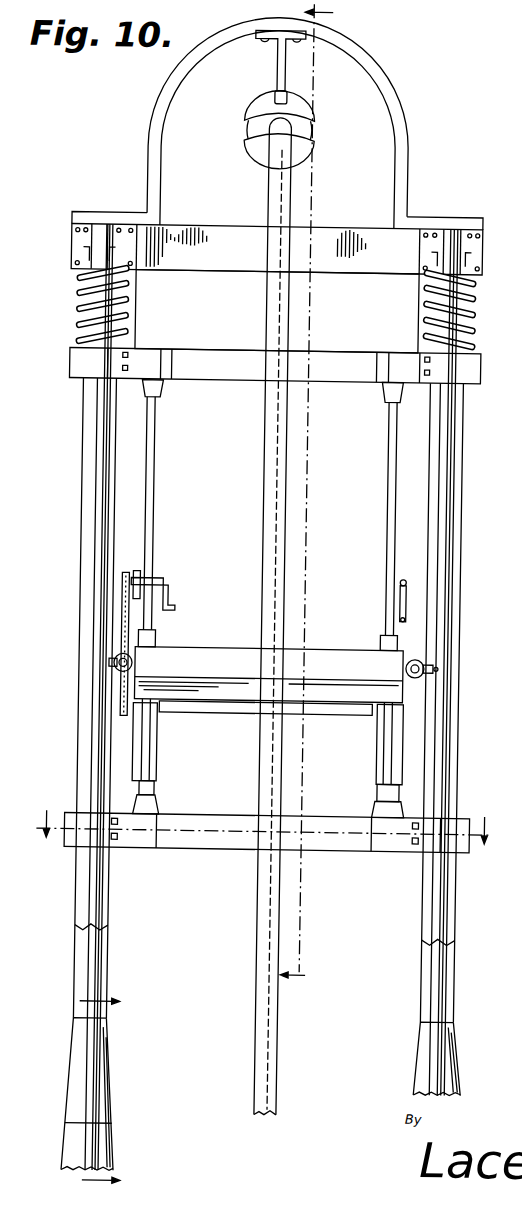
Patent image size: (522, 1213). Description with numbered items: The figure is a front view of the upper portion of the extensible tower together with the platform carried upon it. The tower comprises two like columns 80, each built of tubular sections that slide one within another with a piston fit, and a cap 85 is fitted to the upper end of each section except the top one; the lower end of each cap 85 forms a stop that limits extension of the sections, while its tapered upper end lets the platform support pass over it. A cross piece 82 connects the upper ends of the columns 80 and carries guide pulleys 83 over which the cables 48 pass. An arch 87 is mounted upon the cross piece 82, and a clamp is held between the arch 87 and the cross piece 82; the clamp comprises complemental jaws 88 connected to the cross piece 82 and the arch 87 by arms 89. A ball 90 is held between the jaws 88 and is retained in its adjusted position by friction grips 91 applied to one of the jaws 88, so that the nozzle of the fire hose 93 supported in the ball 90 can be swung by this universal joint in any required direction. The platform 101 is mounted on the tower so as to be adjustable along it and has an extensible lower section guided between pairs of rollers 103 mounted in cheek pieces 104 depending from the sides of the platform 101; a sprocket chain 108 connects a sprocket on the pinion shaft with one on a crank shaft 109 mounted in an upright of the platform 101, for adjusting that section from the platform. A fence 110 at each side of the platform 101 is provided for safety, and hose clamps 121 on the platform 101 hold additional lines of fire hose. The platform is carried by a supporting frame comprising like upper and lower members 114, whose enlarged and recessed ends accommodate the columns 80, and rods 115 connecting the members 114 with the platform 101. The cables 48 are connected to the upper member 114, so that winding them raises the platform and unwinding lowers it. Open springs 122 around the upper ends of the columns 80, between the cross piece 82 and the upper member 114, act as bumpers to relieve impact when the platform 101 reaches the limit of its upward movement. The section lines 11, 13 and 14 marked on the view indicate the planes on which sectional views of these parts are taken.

The section line 11- 11 is at (320, 501).
The section line 13- 13 is at (264, 830).
The section line 14- 14 is at (114, 1090).
The cables 48 is at (94, 491).
The columns 80 is at (267, 777).
The cross piece 82 is at (227, 263).
The guide pulleys 83 is at (99, 230).
The cap 85 is at (108, 1089).
The arch 87 is at (394, 124).
The complemental jaws 88 is at (240, 109).
The arms 89 is at (270, 53).
The ball 90 is at (248, 126).
The friction grips 91 is at (278, 92).
The fire hose 93 is at (266, 479).
The platform 101 is at (332, 655).
The rollers 103 is at (333, 708).
The cheek pieces 104 is at (137, 760).
The sprocket chain 108 is at (123, 693).
The crank shaft 109 is at (167, 587).
The fence 110 is at (407, 601).
The upper and lower members 114 is at (237, 373).
The rods 115 is at (154, 464).
The hose clamps 121 is at (113, 673).
The open springs 122 is at (67, 304).